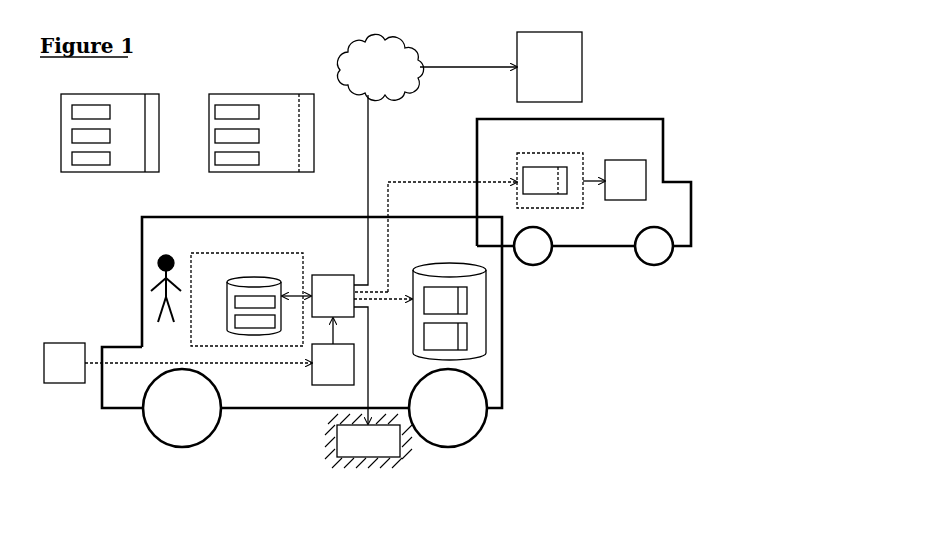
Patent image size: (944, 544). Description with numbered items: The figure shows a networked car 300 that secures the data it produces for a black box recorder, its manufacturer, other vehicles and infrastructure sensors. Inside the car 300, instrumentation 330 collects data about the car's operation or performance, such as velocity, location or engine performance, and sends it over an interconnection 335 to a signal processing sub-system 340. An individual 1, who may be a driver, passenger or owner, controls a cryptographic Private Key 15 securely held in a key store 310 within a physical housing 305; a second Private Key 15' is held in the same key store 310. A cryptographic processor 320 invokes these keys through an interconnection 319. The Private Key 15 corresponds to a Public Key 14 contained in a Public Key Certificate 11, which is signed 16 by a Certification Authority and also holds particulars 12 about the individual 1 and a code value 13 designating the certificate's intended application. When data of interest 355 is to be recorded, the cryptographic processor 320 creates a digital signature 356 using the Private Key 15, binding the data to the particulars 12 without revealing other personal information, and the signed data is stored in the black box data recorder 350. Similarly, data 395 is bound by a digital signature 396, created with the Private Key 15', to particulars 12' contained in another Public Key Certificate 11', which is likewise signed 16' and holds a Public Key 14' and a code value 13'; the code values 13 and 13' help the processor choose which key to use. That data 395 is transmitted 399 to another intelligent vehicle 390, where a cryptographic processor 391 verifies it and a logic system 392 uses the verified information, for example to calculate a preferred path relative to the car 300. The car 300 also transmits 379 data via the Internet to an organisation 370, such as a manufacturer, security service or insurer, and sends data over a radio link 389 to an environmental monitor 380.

The individual 1 is at (166, 300).
The Public Key Certificate 11 is at (104, 142).
The Public Key Certificate 11' is at (261, 142).
The particulars 12 is at (105, 107).
The code value 13 is at (105, 132).
The Public Key 14 is at (105, 154).
The particulars 12' is at (253, 107).
The code value 13' is at (253, 132).
The Public Key 14' is at (253, 154).
The Private Key 15 is at (233, 309).
The Private Key 15' is at (233, 328).
The signature of Certification Authority 16 is at (169, 133).
The signature of Certification Authority 16' is at (321, 133).
The networked car 300 is at (140, 272).
The physical housing 305 is at (235, 252).
The key store 310 is at (232, 278).
The interconnection 319 is at (297, 293).
The cryptographic processor 320 is at (338, 275).
The instrumentation 330 is at (63, 388).
The interconnection 335 is at (262, 366).
The signal processing sub-system 340 is at (322, 380).
The black box data recorder 350 is at (425, 362).
The data of interest 355 is at (442, 292).
The digital signature 356 is at (470, 300).
The organisation 370 is at (549, 67).
The transmission via the Internet 379 is at (365, 182).
The environmental monitor 380 is at (368, 441).
The radio link 389 is at (370, 352).
The other intelligent vehicle 390 is at (490, 118).
The cryptographic processor 391 is at (517, 168).
The logic system 392 is at (619, 159).
The data 395 is at (543, 196).
The digital signature 396 is at (565, 196).
The transmission 399 is at (437, 180).